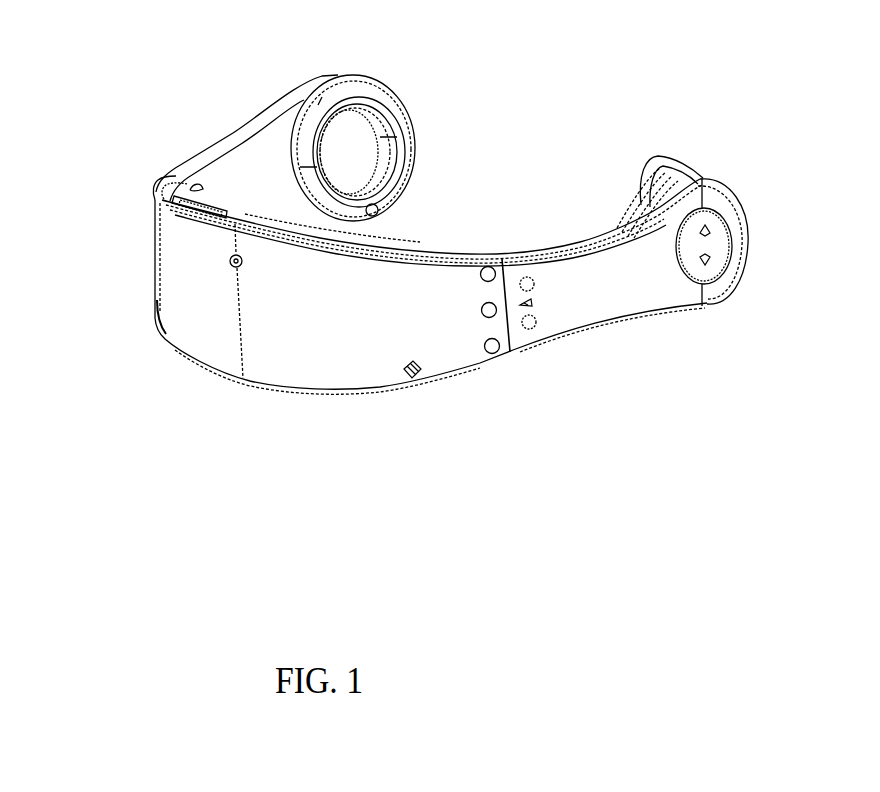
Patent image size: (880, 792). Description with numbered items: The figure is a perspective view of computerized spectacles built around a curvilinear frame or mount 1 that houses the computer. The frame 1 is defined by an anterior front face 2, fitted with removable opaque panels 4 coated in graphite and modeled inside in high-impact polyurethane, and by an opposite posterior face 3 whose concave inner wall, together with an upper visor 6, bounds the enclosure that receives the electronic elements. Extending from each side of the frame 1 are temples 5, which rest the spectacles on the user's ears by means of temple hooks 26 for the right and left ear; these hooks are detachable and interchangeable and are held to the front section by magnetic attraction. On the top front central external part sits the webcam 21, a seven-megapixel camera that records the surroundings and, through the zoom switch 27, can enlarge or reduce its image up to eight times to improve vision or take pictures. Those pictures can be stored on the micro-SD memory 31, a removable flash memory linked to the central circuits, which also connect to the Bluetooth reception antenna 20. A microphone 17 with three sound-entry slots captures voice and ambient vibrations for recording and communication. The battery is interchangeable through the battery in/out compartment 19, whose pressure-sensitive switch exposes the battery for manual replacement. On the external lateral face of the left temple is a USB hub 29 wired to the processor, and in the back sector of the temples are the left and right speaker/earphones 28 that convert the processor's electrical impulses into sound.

The frame or mount 1 is at (157, 186).
The front face 2 is at (175, 264).
The posterior face 3 is at (183, 194).
The removable opaque panels 4 is at (193, 340).
The temples 5 is at (252, 172).
The upper visor 6 is at (250, 213).
The microphone 17 is at (414, 377).
The battery in/out compartment 19 is at (213, 208).
The Bluetooth reception antenna 20 is at (160, 312).
The webcam 21 is at (242, 266).
The temple hooks for right and left ear 26 is at (358, 76).
The zoom switch 27 is at (712, 231).
The speaker/earphone left and right 28 is at (355, 153).
The USB hub 29 is at (533, 302).
The micro-SD memory 31 is at (165, 199).